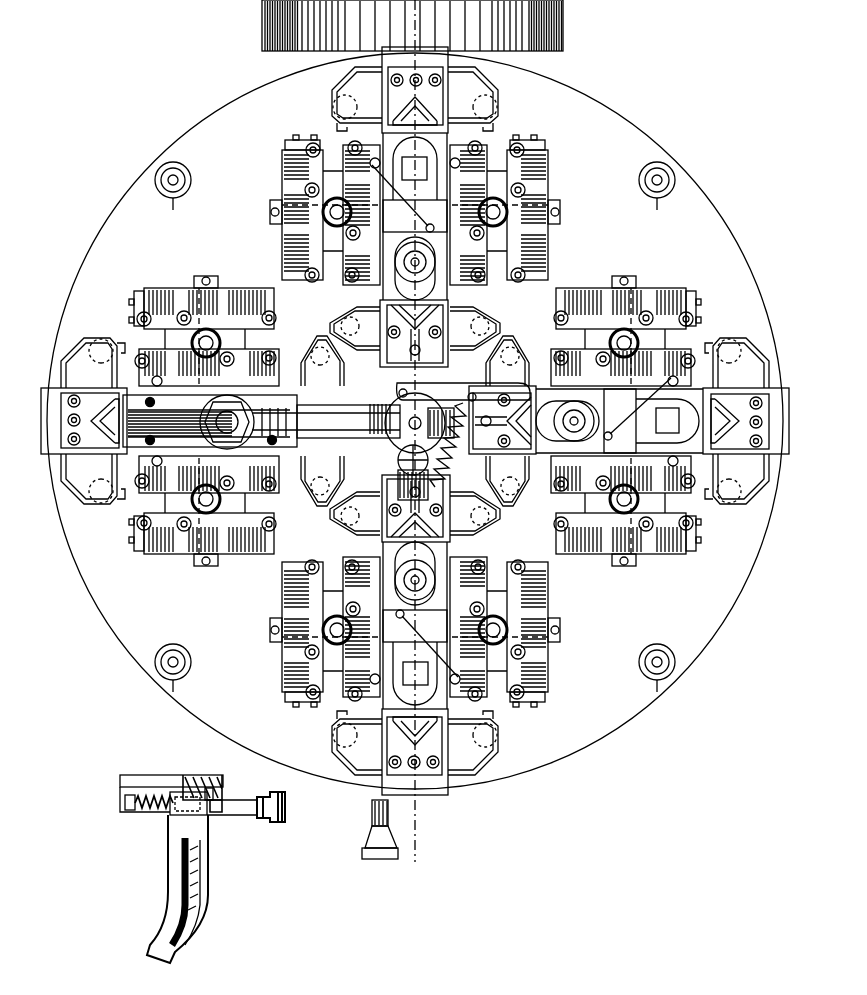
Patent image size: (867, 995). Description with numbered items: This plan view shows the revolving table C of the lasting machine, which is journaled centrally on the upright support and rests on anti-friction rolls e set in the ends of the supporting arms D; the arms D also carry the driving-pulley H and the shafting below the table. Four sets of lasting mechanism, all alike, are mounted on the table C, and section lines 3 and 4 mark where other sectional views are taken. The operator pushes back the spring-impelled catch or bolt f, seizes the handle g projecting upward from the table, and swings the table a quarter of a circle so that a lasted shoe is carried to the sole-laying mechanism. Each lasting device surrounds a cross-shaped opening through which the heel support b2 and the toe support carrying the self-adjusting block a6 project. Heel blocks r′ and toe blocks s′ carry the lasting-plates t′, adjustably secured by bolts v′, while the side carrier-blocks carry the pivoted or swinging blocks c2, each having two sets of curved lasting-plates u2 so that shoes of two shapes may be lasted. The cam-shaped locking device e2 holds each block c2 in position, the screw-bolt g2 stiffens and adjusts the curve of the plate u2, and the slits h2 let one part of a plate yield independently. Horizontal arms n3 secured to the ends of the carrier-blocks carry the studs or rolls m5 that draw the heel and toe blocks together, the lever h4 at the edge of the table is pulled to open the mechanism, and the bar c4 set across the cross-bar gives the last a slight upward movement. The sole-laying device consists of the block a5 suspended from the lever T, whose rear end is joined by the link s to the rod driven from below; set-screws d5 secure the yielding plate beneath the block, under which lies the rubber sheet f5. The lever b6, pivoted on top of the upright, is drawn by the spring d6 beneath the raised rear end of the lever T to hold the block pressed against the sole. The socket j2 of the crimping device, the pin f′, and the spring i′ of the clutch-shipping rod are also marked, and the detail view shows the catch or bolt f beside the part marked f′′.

In FIG. 2, the revolving table C is at (415, 421).
In FIG. 2, the driving-pulley H is at (565, 33).
In FIG. 2, the handle g is at (418, 427).
In FIG. 2, the spring d6 is at (295, 441).
In FIG. 2, the set-screws d5 is at (161, 404).
In FIG. 2, the sole-laying block a5 is at (211, 441).
In FIG. 2, the lever T is at (353, 421).
In FIG. 2, the link s is at (415, 423).
In FIG. 2, the socket or shank j2 is at (392, 470).
In FIG. 2, the lever b6 is at (466, 382).
In FIG. 2, the spring-impelled catch or bolt f is at (367, 836).
In FIG. 2A, the spring-impelled catch or bolt f is at (230, 816).
In FIG. 2, the section line 3 is at (413, 865).
In FIG. 2, the section line 4 is at (40, 422).
In FIG. 2, the bolts v′ is at (410, 421).
In FIG. 2, the toe block s′ is at (405, 417).
In FIG. 2, the lasting-plate t′ is at (103, 404).
In FIG. 2, the lug m5 is at (486, 106).
In FIG. 2, the horizontal arms n3 is at (406, 425).
In FIG. 2, the slits h2 is at (540, 181).
In FIG. 2, the lasting-plates u2 is at (411, 417).
In FIG. 2, the screw-bolt g2 is at (424, 435).
In FIG. 2, the cam-shaped locking device e2 is at (417, 393).
In FIG. 2, the pin f′ is at (337, 418).
In FIG. 2, the swinging blocks c2 is at (408, 438).
In FIG. 2, the self-adjusting block a6 is at (542, 433).
In FIG. 2, the lever h4 is at (501, 420).
In FIG. 2, the heel support b2 is at (497, 426).
In FIG. 2, the bar c4 is at (534, 335).
In FIG. 2, the spring i′ is at (432, 108).
In FIG. 2, the heel block r′ is at (401, 406).
In FIG. 2A, the anti-friction rolls e is at (204, 784).
In FIG. 2A, the pin f′′ is at (216, 792).
In FIG. 2A, the sheet of rubber f5 is at (160, 806).
In FIG. 2A, the projecting arms D is at (195, 893).